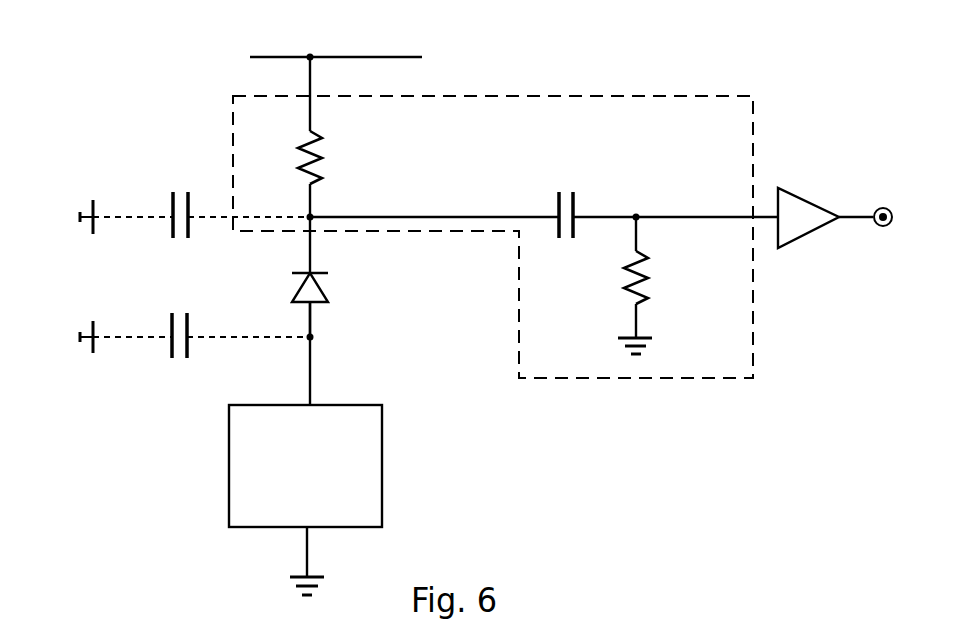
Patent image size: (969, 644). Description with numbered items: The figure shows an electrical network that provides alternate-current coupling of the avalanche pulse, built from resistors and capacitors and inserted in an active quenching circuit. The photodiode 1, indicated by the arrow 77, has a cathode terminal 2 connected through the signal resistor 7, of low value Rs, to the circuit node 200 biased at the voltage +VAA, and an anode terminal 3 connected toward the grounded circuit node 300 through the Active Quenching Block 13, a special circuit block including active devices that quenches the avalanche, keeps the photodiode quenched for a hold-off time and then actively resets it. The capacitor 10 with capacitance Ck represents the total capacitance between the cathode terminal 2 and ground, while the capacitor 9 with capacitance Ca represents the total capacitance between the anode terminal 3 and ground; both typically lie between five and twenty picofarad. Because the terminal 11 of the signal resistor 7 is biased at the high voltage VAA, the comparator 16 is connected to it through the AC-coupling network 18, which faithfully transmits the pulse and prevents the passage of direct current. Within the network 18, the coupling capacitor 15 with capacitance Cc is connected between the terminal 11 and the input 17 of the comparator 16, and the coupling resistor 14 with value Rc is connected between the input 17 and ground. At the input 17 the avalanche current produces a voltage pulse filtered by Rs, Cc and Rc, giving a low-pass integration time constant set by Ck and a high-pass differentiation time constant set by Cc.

The circuit node 200 is at (310, 73).
The AC-coupling network 18 is at (586, 96).
The signal resistor 7 is at (320, 166).
The terminal of the resistor 11 is at (312, 216).
The SPAD 1 is at (318, 291).
The cathode terminal 2 is at (318, 272).
The anode terminal 3 is at (318, 302).
The arrow indicating SPAD 77 is at (274, 272).
The capacitor 10 is at (172, 202).
The capacitor 9 is at (170, 355).
The Active Quenching Block 13 is at (382, 468).
The circuit node 300 is at (305, 566).
The coupling capacitor 15 is at (555, 200).
The input of the comparator 17 is at (638, 216).
The coupling resistor 14 is at (652, 286).
The comparator 16 is at (806, 200).